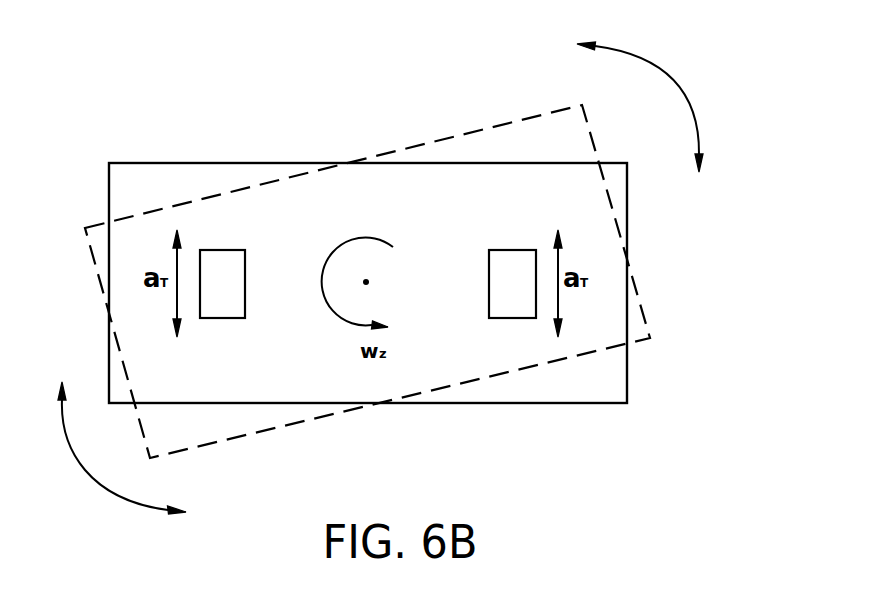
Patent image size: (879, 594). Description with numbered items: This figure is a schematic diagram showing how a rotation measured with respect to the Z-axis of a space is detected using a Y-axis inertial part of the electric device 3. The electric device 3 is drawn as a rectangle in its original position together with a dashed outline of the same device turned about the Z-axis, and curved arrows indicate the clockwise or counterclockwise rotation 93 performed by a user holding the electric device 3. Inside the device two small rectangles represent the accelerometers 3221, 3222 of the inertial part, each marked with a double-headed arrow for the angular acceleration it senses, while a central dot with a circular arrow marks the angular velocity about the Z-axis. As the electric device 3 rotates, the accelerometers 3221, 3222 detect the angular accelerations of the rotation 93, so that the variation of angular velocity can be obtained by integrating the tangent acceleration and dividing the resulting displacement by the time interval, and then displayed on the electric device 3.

The electric device 3 is at (86, 101).
The rotation 93 is at (672, 88).
The first accelerometer 3221 is at (220, 318).
The second accelerometer 3222 is at (510, 318).